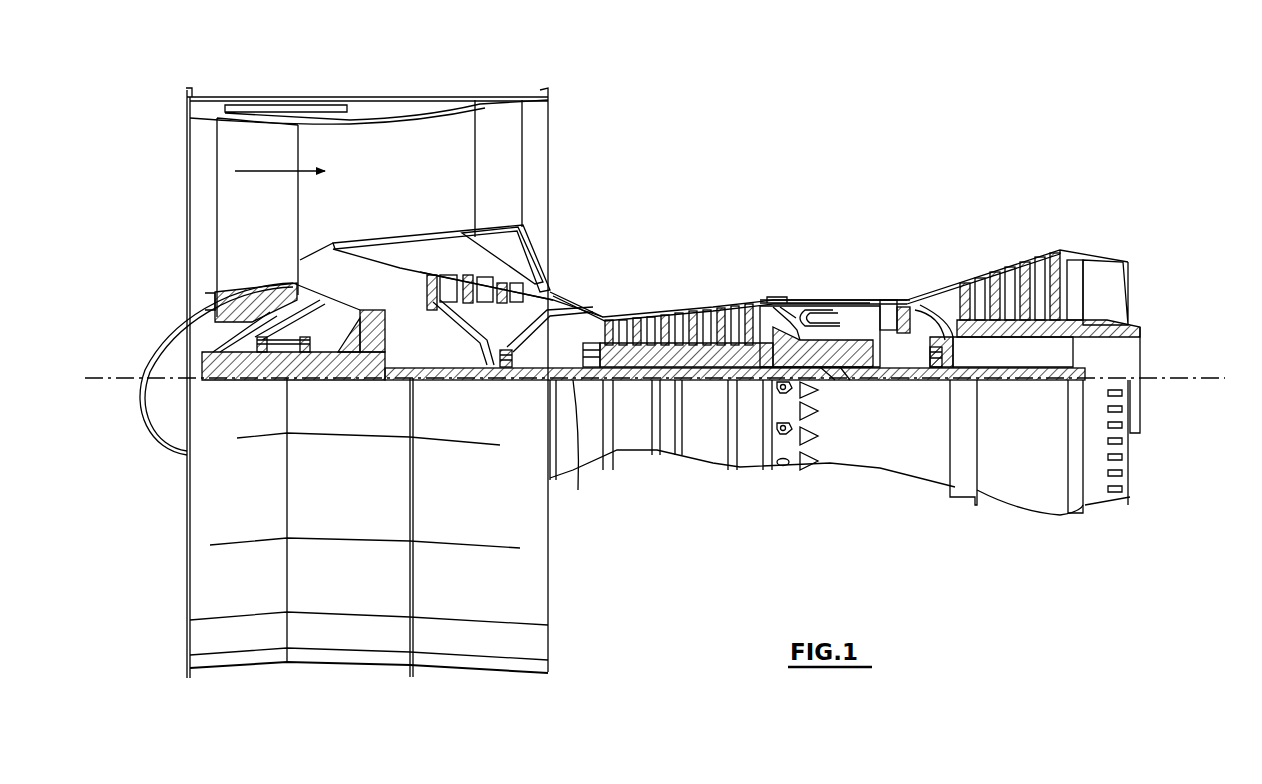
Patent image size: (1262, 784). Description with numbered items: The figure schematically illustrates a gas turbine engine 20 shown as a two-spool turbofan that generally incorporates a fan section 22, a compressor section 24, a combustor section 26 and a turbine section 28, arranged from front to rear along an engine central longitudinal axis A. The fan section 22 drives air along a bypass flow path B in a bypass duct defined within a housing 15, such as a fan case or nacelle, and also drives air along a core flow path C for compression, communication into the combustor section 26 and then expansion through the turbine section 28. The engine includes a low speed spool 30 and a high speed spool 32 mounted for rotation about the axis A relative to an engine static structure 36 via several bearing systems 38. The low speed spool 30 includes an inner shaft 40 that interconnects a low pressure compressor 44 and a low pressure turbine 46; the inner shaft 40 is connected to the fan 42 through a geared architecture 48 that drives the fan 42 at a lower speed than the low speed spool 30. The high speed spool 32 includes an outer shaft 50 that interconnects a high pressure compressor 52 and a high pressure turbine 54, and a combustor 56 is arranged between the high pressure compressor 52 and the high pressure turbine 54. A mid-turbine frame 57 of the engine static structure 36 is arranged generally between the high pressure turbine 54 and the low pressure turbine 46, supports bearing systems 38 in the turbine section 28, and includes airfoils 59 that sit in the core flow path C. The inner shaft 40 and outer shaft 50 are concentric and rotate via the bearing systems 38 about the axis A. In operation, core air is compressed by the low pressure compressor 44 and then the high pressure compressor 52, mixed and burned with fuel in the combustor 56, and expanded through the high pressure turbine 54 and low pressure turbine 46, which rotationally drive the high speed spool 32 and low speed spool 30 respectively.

The gas turbine engine 20 is at (825, 147).
The fan section 22 is at (300, 85).
The housing 15 is at (368, 100).
The fan 42 is at (270, 225).
The bypass flow path B is at (268, 170).
The core flow path C is at (362, 276).
The low pressure compressor 44 is at (468, 290).
The compressor section 24 is at (600, 286).
The high pressure compressor 52 is at (687, 353).
The high speed spool 32 is at (748, 345).
The combustor section 26 is at (822, 270).
The combustor 56 is at (822, 322).
The high pressure turbine 54 is at (885, 300).
The mid-turbine frame 57 is at (930, 290).
The turbine section 28 is at (968, 240).
The low pressure turbine 46 is at (1015, 270).
The airfoils 59 is at (952, 330).
The outer shaft 50 is at (833, 375).
The bearing systems 38 is at (507, 370).
The geared architecture 48 is at (377, 372).
The inner shaft 40 is at (574, 382).
The low speed spool 30 is at (707, 395).
The engine static structure 36 is at (748, 475).
The engine central longitudinal axis A is at (1222, 378).